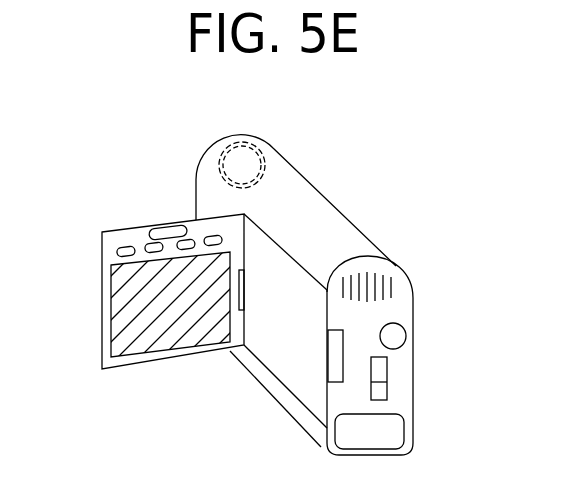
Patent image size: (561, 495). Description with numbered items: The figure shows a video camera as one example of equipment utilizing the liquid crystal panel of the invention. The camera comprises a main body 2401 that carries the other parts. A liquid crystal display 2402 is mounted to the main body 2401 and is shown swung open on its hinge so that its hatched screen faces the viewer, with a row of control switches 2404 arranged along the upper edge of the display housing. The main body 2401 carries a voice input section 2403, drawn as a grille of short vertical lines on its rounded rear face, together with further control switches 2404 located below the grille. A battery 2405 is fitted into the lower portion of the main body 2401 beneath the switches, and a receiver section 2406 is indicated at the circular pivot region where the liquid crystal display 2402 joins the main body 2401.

The main body 2401 is at (303, 205).
The liquid crystal display 2402 is at (189, 340).
The voice input section 2403 is at (394, 265).
The control switches 2404 is at (170, 230).
The battery 2405 is at (362, 433).
The receiver section 2406 is at (223, 152).